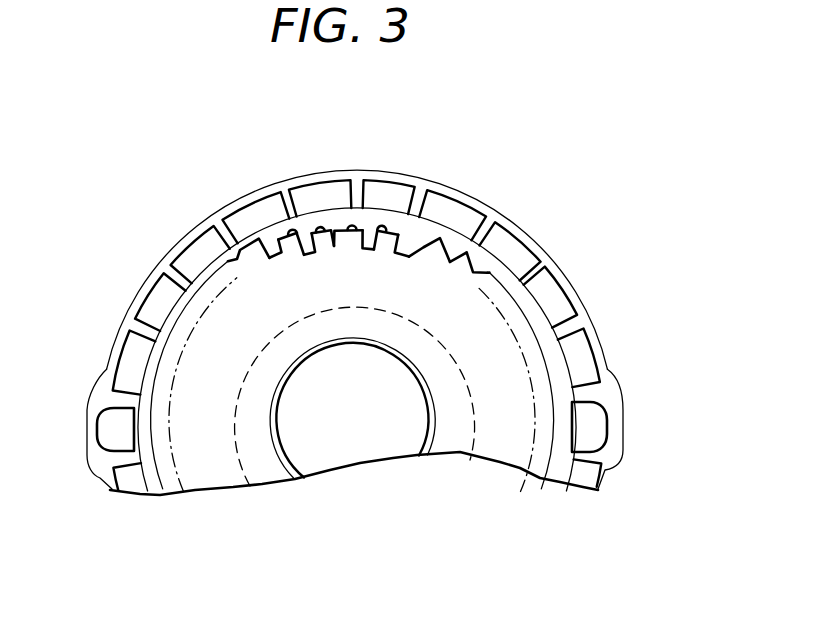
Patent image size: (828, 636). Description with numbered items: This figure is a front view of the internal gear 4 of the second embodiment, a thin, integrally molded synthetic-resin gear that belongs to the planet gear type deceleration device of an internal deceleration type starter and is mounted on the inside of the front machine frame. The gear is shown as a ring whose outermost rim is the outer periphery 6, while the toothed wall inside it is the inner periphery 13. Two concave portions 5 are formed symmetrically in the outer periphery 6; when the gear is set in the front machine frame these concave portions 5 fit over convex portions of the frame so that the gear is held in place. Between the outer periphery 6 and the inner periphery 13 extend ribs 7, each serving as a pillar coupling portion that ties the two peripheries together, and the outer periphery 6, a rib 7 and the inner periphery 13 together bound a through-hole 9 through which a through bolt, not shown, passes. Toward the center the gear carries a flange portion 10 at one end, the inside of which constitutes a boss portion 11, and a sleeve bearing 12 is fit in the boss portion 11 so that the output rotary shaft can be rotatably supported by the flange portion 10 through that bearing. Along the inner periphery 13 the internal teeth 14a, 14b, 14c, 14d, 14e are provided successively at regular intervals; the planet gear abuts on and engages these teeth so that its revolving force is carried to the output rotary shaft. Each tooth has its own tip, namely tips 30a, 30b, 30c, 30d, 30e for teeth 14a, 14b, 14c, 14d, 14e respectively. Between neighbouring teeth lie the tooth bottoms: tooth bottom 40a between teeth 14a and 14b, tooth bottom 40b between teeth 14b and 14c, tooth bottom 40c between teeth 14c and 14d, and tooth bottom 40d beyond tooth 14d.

The internal gear 4 is at (217, 213).
The concave portion 5 is at (100, 405).
The outer periphery 6 is at (247, 203).
The rib 7 is at (476, 222).
The through-hole 9 is at (118, 442).
The flange portion 10 is at (207, 470).
The boss portion 11 is at (450, 437).
The sleeve bearing 12 is at (277, 457).
The inner periphery 13 is at (167, 313).
The internal tooth 14a is at (276, 246).
The internal tooth 14b is at (307, 227).
The internal tooth 14c is at (352, 224).
The internal tooth 14d is at (400, 228).
The internal tooth 14e is at (438, 222).
The tip of internal tooth 30a is at (256, 264).
The tip of internal tooth 30b is at (282, 254).
The tip of internal tooth 30c is at (340, 241).
The tip of internal tooth 30d is at (368, 241).
The tip of internal tooth 30e is at (420, 251).
The tooth bottom 40a is at (300, 229).
The tooth bottom 40b is at (327, 223).
The tooth bottom 40c is at (378, 225).
The tooth bottom 40d is at (412, 226).